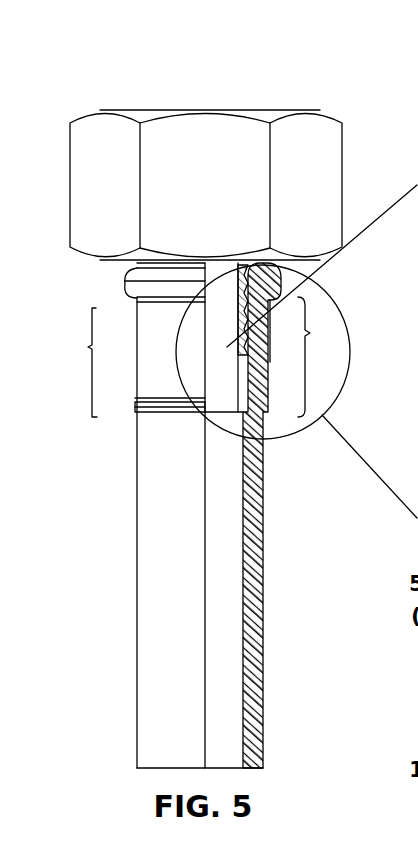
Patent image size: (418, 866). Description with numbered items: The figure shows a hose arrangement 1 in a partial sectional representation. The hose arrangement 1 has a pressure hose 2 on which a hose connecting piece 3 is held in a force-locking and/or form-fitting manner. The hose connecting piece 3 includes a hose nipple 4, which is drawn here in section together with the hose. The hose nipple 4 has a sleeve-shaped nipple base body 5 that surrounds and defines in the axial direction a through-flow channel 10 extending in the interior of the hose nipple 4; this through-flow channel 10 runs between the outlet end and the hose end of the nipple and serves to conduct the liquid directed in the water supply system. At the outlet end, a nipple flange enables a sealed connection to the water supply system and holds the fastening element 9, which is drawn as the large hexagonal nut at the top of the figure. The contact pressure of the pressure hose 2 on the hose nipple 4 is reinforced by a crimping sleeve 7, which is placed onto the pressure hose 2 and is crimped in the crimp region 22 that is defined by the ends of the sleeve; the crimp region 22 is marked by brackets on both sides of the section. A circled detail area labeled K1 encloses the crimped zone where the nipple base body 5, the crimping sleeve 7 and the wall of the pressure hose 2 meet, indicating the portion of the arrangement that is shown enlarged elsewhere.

The hose arrangement 1 is at (110, 478).
The pressure hose 2 is at (259, 616).
The hose connecting piece 3 is at (206, 132).
The hose nipple 4 is at (215, 373).
The nipple base body 5 is at (245, 318).
The crimping sleeve 7 is at (147, 311).
The fastening element 9 is at (318, 140).
The through-flow channel 10 is at (217, 412).
The crimp region 22 is at (239, 340).
The detail region K1 is at (350, 360).